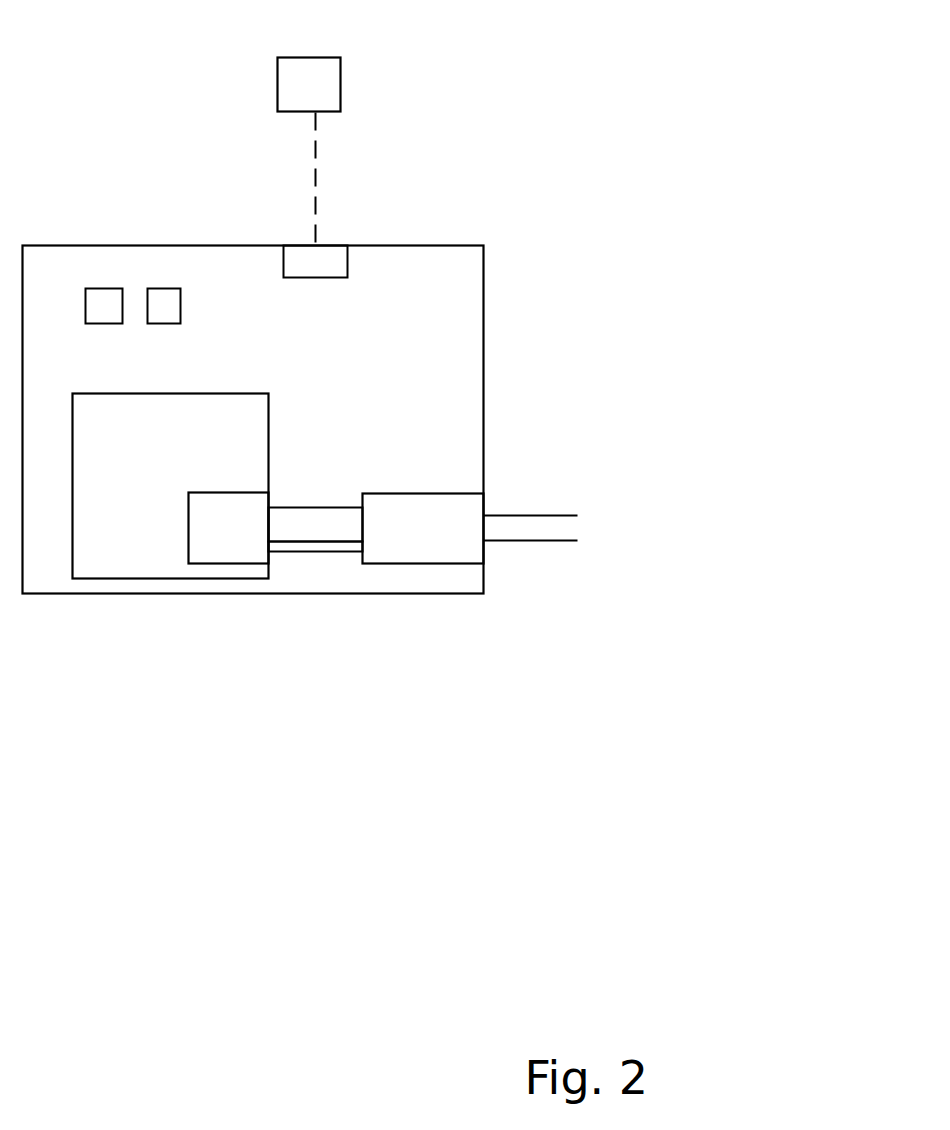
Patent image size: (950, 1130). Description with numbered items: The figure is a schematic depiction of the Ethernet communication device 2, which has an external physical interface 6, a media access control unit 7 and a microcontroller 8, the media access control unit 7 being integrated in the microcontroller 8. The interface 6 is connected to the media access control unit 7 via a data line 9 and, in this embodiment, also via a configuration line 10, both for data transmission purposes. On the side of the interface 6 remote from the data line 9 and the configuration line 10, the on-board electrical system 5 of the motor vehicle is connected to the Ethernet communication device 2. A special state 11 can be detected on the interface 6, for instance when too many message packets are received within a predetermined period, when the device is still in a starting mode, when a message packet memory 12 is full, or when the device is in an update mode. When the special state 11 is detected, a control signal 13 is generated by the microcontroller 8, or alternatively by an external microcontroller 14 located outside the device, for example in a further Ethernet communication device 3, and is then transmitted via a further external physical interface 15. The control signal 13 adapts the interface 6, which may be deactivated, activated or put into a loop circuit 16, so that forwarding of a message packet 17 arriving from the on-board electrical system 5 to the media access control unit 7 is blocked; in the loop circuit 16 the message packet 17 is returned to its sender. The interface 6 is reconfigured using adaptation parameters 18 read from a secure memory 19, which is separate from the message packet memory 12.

The Ethernet communication device 2 is at (362, 245).
The further Ethernet communication device 3 is at (349, 102).
The on-board electrical system 5 is at (524, 495).
The external physical interface 6 is at (432, 493).
The media access control unit 7 is at (228, 492).
The microcontroller 8 is at (172, 393).
The data line 9 is at (303, 541).
The configuration line 10 is at (342, 505).
The special state 11 is at (432, 572).
The message packet memory 12 is at (102, 288).
The control signal 13 is at (280, 119).
The external microcontroller 14 is at (340, 80).
The further external physical interface 15 is at (313, 277).
The loop circuit 16 is at (462, 572).
The message packet 17 is at (496, 549).
The adaptation parameters 18 is at (150, 331).
The secure memory 19 is at (163, 288).